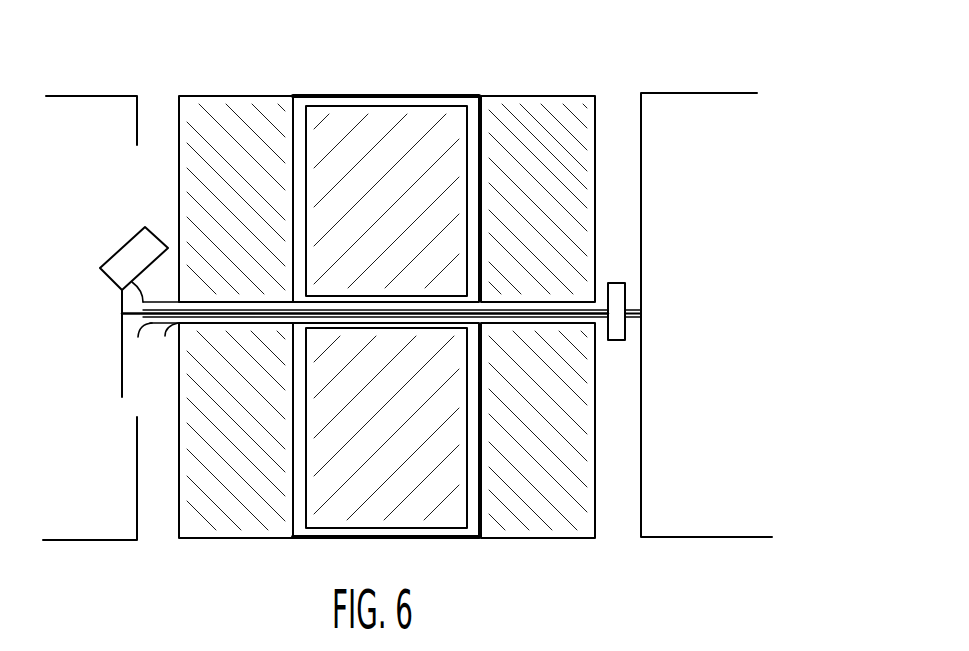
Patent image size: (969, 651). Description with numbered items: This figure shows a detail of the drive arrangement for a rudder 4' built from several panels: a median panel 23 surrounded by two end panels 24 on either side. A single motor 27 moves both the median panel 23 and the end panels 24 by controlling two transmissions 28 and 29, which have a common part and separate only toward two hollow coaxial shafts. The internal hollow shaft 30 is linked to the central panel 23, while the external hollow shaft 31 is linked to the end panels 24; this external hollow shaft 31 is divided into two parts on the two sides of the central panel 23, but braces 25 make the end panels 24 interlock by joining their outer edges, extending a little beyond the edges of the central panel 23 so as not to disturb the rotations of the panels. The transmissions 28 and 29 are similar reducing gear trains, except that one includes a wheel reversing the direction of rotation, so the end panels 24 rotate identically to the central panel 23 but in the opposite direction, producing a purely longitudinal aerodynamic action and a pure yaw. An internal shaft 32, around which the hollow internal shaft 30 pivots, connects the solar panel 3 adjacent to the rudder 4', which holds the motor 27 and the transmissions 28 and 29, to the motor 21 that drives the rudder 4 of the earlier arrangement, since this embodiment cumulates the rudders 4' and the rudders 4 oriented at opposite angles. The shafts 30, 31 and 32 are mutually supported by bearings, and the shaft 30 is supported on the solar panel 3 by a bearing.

The solar panel 3 is at (102, 536).
The rudder 4 is at (706, 361).
The rudder 4' is at (206, 596).
The motor 21 is at (614, 283).
The median panel 23 is at (333, 125).
The end panels 24 is at (218, 107).
The braces 25 is at (427, 97).
The motor 27 is at (118, 252).
The transmission 28 is at (137, 297).
The transmission 29 is at (160, 302).
The internal hollow shaft 30 is at (549, 304).
The external hollow shaft 31 is at (197, 324).
The internal shaft 32 is at (334, 310).